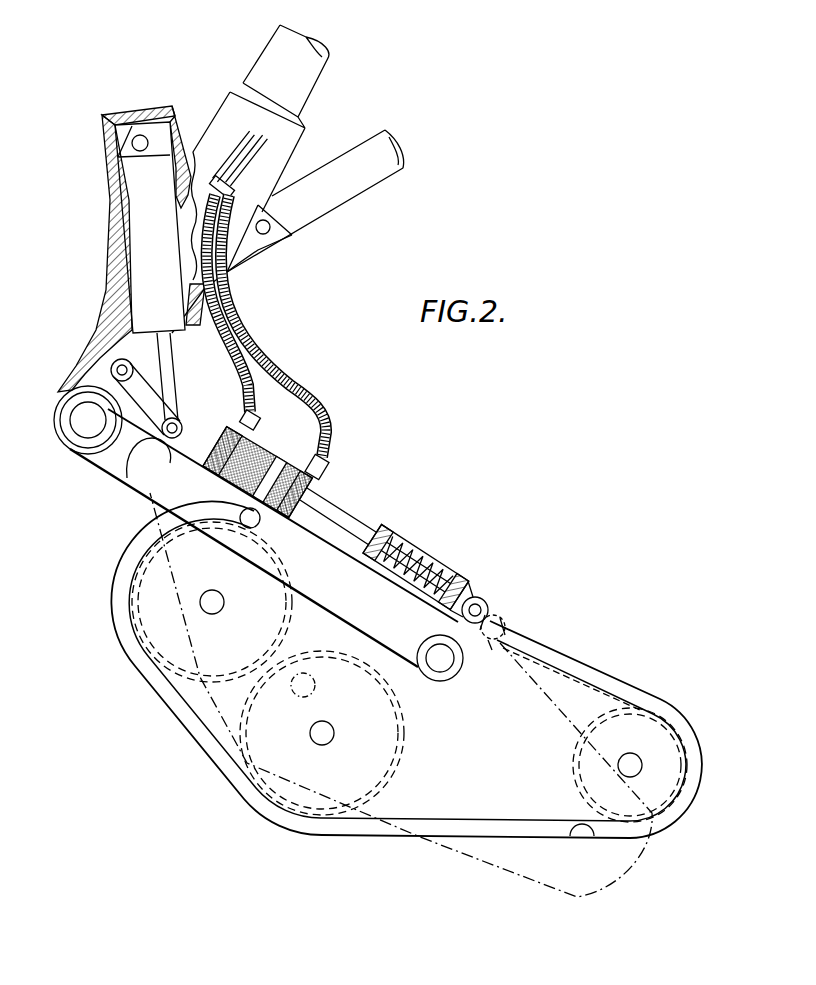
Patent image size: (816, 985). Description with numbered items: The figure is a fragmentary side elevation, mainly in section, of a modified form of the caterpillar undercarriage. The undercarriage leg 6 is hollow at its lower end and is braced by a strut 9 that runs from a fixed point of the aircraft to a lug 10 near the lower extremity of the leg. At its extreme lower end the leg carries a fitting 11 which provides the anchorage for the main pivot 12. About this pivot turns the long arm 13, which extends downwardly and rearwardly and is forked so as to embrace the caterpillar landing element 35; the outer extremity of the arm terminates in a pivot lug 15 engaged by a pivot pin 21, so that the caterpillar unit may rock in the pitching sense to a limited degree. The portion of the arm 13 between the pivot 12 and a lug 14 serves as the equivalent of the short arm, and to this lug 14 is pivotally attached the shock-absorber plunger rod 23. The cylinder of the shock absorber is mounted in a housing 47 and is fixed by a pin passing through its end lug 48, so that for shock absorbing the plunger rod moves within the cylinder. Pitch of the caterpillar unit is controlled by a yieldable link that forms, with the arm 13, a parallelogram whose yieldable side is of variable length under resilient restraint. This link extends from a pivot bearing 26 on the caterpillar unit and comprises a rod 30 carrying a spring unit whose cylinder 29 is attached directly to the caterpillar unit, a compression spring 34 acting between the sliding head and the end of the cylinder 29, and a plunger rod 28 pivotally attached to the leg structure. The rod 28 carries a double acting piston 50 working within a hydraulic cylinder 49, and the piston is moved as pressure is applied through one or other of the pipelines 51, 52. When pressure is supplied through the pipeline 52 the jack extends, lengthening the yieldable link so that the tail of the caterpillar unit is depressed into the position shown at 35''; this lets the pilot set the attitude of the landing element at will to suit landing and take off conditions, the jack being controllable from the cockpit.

The undercarriage leg 6 is at (308, 77).
The strut 9 is at (378, 163).
The lug 10 is at (243, 252).
The fitting 11 is at (113, 297).
The main pivot 12 is at (85, 432).
The arm 13 is at (148, 477).
The lug 14 is at (240, 417).
The pivot lug 15 is at (455, 673).
The pivot pin 21 is at (438, 662).
The shock-absorber plunger rod 23 is at (163, 355).
The pivot bearing 26 is at (492, 623).
The plunger rod 28 is at (168, 422).
The cylinder 29 is at (465, 580).
The rod 30 is at (345, 512).
The compression spring 34 is at (420, 572).
The caterpillar landing element 35 is at (406, 669).
The depressed tail position 35'' is at (401, 700).
The housing 47 is at (176, 117).
The end lug 48 is at (127, 153).
The hydraulic cylinder 49 is at (317, 482).
The piston 50 is at (302, 414).
The pipeline 51 is at (232, 303).
The pipeline 52 is at (262, 357).